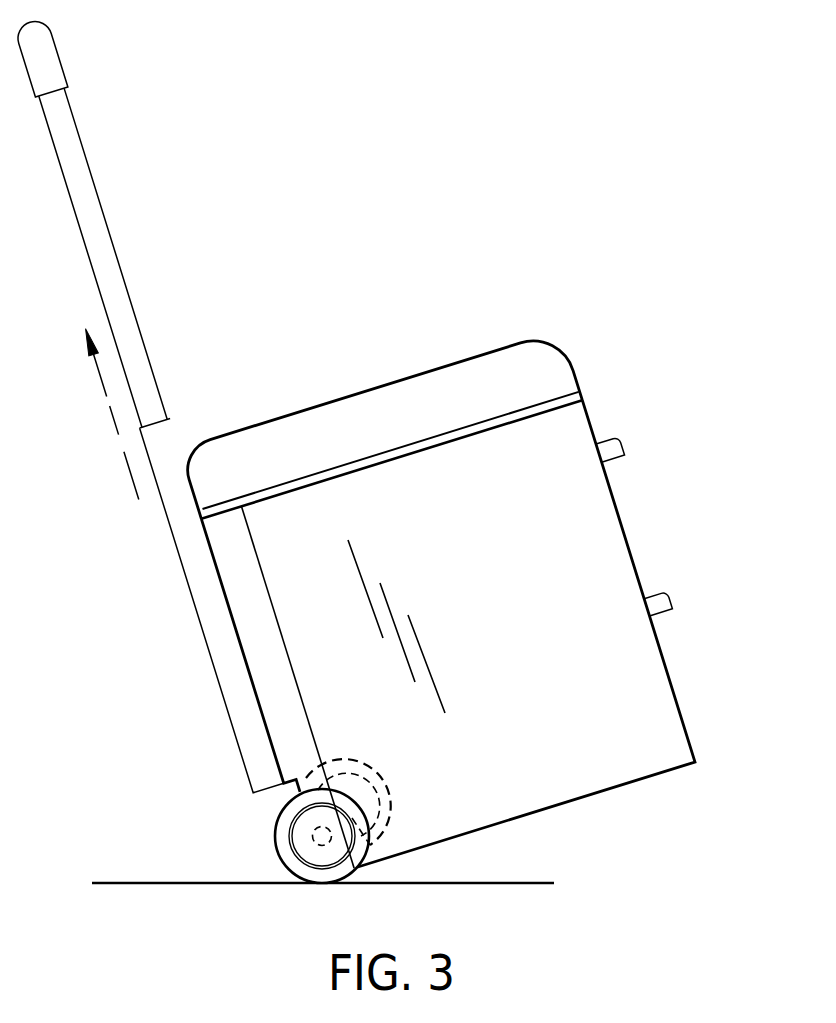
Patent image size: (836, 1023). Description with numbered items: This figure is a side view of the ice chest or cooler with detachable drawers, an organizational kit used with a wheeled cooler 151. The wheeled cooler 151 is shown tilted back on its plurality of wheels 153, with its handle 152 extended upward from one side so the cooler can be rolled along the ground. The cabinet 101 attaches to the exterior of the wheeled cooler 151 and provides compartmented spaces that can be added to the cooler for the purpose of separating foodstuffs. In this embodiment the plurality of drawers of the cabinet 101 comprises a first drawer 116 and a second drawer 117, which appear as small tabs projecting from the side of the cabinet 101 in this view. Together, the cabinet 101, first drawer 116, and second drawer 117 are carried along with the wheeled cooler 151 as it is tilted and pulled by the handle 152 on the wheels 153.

The cabinet 101 is at (588, 542).
The first drawer 116 is at (623, 446).
The second drawer 117 is at (670, 601).
The wheeled cooler 151 is at (520, 373).
The handle 152 is at (112, 283).
The wheels 153 is at (323, 882).